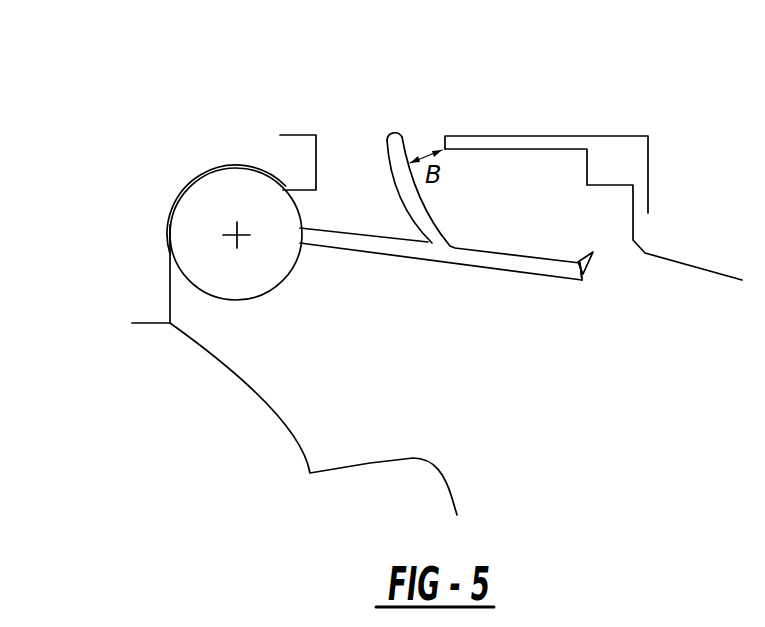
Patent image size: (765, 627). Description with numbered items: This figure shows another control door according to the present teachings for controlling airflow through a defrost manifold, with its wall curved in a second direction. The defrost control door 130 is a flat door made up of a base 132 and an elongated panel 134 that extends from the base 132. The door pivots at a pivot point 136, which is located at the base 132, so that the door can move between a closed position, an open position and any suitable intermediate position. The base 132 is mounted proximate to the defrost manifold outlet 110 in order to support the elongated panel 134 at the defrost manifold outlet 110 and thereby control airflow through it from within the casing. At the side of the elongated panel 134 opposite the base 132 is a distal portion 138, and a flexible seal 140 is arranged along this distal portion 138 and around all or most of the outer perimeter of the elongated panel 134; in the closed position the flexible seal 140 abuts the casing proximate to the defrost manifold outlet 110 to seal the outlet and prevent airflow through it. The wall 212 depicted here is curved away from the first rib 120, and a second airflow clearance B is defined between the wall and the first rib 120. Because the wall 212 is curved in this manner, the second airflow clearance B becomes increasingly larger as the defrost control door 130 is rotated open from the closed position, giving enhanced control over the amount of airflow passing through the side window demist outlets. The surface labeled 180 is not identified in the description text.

The defrost manifold outlet 110 is at (432, 139).
The first rib 120 is at (510, 142).
The defrost control door 130 is at (422, 290).
The base 132 is at (203, 244).
The elongated panel 134 is at (497, 262).
The pivot point 136 is at (232, 232).
The distal portion 138 is at (585, 276).
The flexible seal 140 is at (592, 262).
The body panel 180 is at (455, 500).
The wall 212 is at (392, 145).